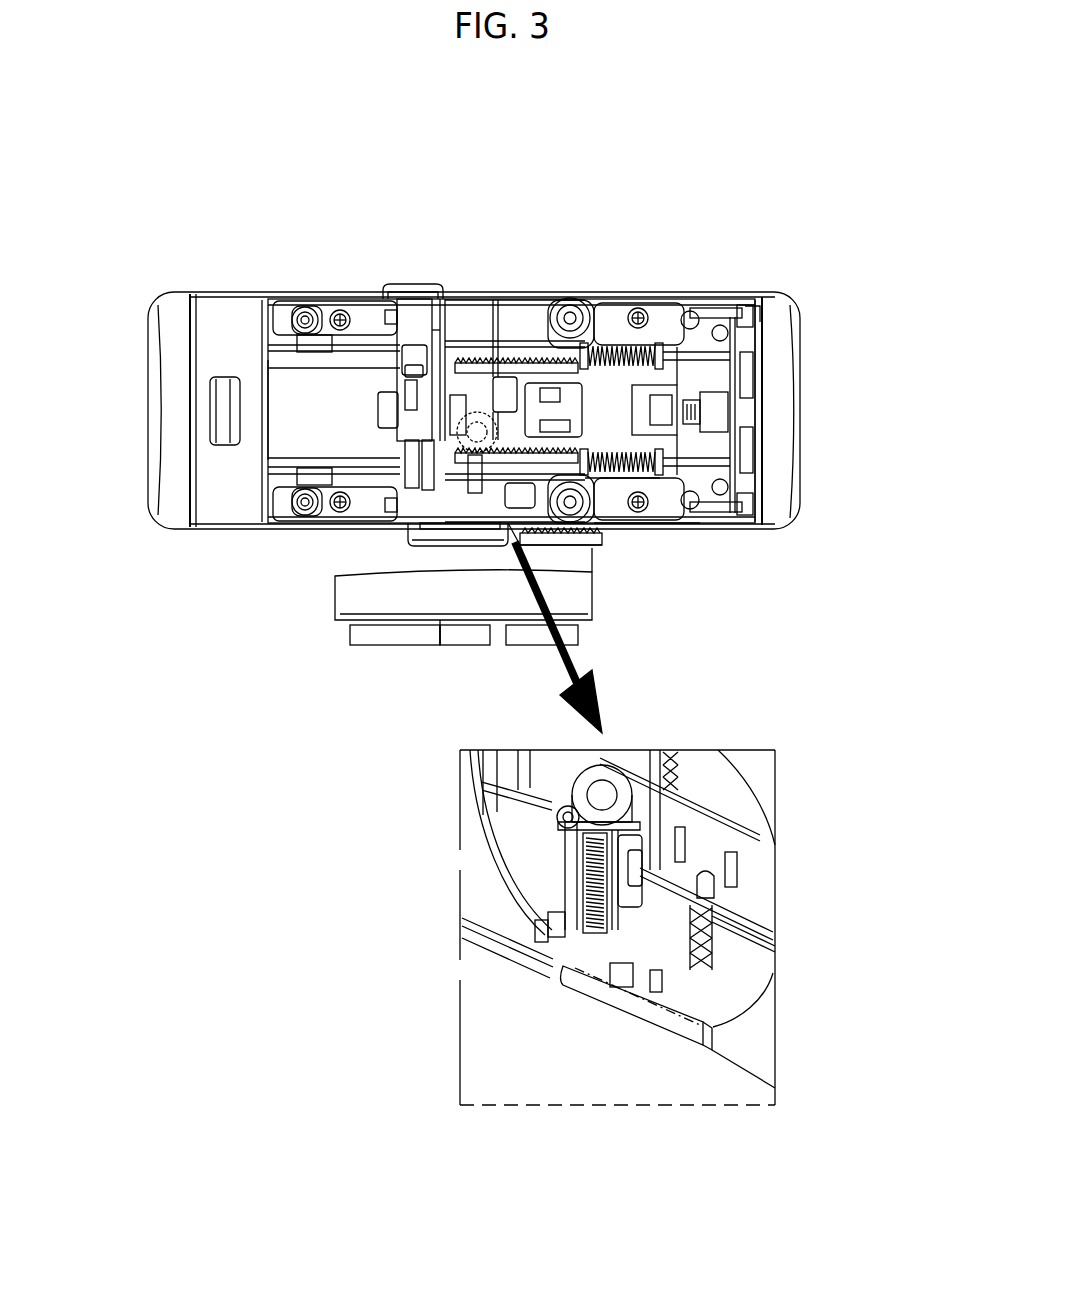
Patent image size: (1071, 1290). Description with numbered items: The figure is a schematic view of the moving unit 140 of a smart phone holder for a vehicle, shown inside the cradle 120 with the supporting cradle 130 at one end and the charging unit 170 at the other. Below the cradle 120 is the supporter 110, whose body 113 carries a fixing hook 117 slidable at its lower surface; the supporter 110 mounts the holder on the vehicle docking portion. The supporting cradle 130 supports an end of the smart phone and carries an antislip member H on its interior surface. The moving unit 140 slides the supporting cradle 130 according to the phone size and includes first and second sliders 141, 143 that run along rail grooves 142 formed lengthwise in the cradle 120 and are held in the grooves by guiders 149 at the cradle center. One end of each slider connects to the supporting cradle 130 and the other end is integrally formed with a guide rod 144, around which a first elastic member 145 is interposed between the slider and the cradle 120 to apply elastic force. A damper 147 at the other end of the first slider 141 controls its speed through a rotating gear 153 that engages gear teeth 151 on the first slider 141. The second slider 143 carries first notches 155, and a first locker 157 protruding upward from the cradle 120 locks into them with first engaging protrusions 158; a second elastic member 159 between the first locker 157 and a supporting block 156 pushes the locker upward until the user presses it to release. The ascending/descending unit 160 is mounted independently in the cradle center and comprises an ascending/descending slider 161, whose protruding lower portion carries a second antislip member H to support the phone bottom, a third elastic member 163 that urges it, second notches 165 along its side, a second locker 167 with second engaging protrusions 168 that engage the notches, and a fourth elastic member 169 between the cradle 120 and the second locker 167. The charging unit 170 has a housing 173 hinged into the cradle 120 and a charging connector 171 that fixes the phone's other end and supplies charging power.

The supporter 110 is at (300, 608).
The body 113 is at (545, 556).
The fixing hook 117 is at (458, 600).
The cradle 120 is at (596, 300).
The supporting cradle 130 is at (165, 328).
The moving unit 140 is at (486, 296).
The first slider 141 is at (280, 472).
The rail grooves 142 is at (500, 385).
The second slider 143 is at (286, 360).
The guide rod 144 is at (690, 357).
The first elastic member 145 is at (640, 330).
The damper 147 is at (470, 340).
The guiders 149 is at (463, 408).
The gear teeth 151 is at (614, 478).
The rotating gear 153 is at (660, 520).
The first notches 155 is at (540, 362).
The supporting block 156 is at (395, 490).
The first locker 157 is at (414, 292).
The first engaging protrusions 158 is at (412, 360).
The second elastic member 159 is at (415, 430).
The ascending/descending unit 160 is at (406, 622).
The ascending/descending slider 161 is at (436, 535).
The third elastic member 163 is at (540, 935).
The second notches 165 is at (590, 542).
The second locker 167 is at (552, 537).
The second engaging protrusions 168 is at (452, 640).
The fourth elastic member 169 is at (540, 548).
The charging unit 170 is at (758, 300).
The charging connector 171 is at (703, 410).
The housing 173 is at (764, 312).
The antislip member H is at (216, 400).